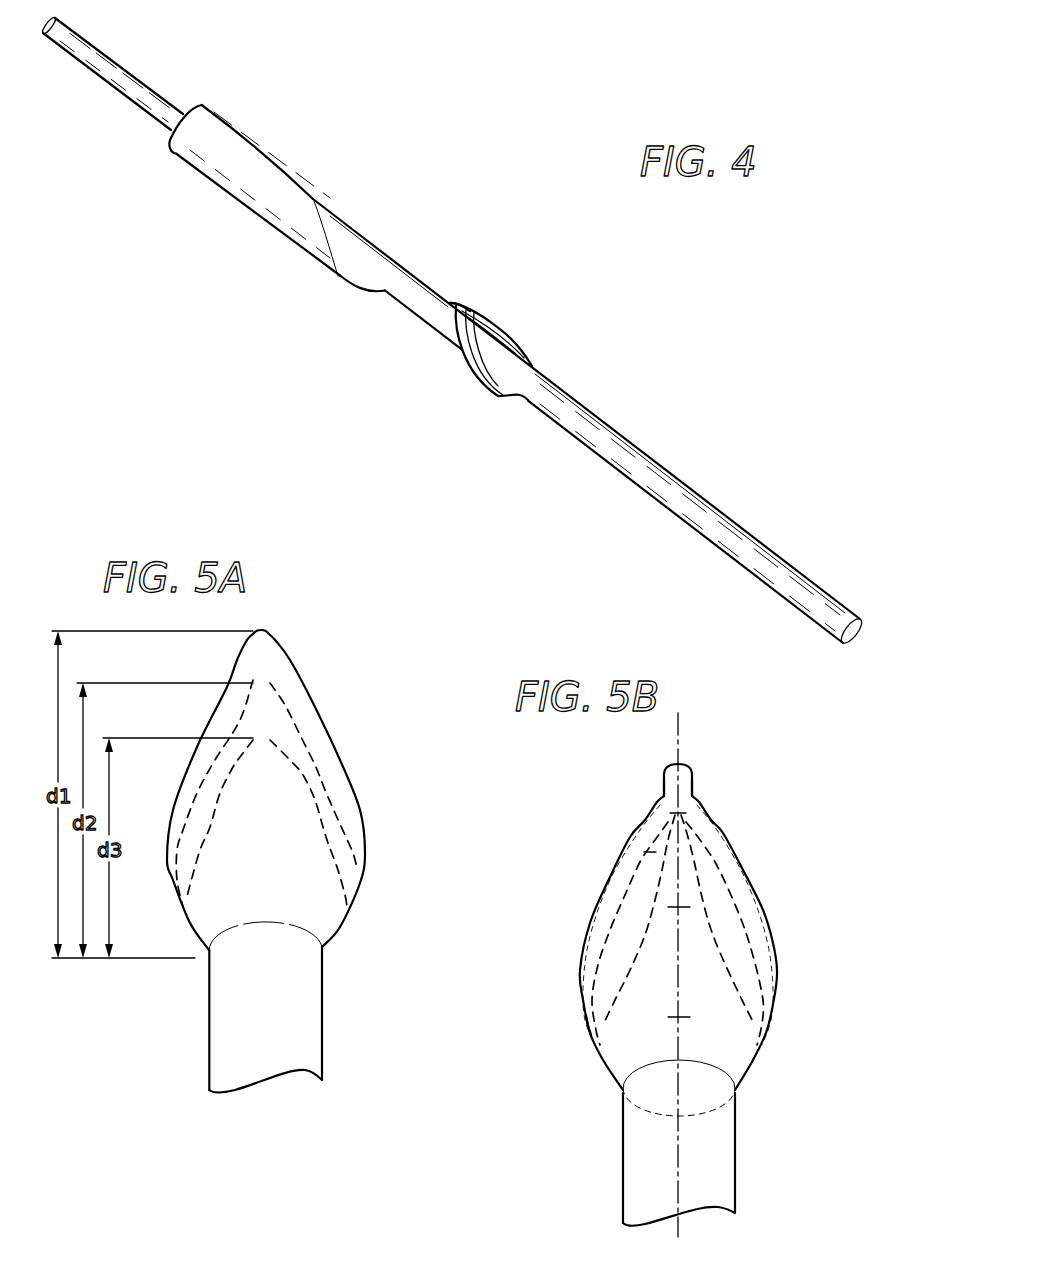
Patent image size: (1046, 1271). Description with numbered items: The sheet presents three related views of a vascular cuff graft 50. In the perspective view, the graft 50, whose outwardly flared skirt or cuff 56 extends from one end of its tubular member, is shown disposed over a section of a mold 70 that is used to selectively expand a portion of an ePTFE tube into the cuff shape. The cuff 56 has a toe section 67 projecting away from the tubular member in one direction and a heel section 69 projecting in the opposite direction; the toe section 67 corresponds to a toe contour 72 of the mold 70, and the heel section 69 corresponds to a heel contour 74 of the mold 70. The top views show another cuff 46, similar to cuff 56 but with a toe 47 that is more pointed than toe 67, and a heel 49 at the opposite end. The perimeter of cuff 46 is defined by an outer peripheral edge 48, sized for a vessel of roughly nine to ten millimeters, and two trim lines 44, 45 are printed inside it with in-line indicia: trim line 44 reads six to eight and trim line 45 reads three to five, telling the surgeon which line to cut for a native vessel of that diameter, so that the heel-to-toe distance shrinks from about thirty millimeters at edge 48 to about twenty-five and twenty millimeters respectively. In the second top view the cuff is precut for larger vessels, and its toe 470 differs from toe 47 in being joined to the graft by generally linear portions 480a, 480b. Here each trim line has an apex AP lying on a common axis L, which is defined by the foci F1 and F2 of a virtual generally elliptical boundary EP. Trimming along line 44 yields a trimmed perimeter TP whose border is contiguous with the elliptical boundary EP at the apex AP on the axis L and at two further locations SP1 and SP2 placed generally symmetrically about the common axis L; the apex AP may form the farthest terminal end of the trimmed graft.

In FIG. 4, the vascular cuff graft 50 is at (672, 519).
In FIG. 4, the cuff 56 is at (524, 352).
In FIG. 4, the toe section 67 is at (453, 303).
In FIG. 4, the heel section 69 is at (501, 398).
In FIG. 4, the mold 70 is at (241, 214).
In FIG. 4, the toe contour 72 is at (319, 201).
In FIG. 4, the lip of sleeve 74 is at (372, 292).
In FIG. 5A, the trim line 44 is at (332, 770).
In FIG. 5B, the trim line 44 is at (763, 910).
In FIG. 5A, the trim line 45 is at (357, 810).
In FIG. 5B, the trim line 45 is at (775, 948).
In FIG. 5A, the cuff 46 is at (318, 706).
In FIG. 5B, the cuff 46 is at (728, 835).
In FIG. 5A, the toe 47 is at (267, 632).
In FIG. 5A, the outer peripheral edge 48 is at (358, 884).
In FIG. 5B, the outer peripheral edge 48 is at (773, 1018).
In FIG. 5A, the heel 49 is at (337, 933).
In FIG. 5B, the heel 49 is at (750, 1070).
In FIG. 5B, the toe 470 is at (687, 767).
In FIG. 5B, the tip shoulder 480a is at (658, 783).
In FIG. 5B, the tip shoulder 480b is at (697, 783).
In FIG. 5B, the common axis L is at (682, 728).
In FIG. 5B, the apex AP is at (675, 812).
In FIG. 5B, the trimmed perimeter TP is at (650, 852).
In FIG. 5B, the virtual generally elliptical boundary EP is at (753, 868).
In FIG. 5B, the location SP1 is at (590, 1032).
In FIG. 5B, the location SP2 is at (767, 1030).
In FIG. 5B, the focus F1 is at (680, 908).
In FIG. 5B, the focus F2 is at (683, 1018).